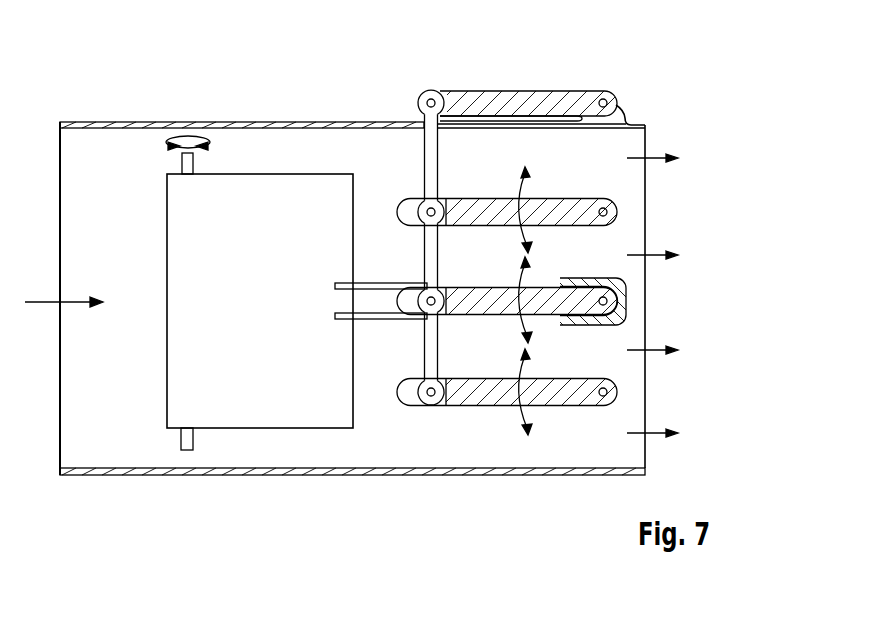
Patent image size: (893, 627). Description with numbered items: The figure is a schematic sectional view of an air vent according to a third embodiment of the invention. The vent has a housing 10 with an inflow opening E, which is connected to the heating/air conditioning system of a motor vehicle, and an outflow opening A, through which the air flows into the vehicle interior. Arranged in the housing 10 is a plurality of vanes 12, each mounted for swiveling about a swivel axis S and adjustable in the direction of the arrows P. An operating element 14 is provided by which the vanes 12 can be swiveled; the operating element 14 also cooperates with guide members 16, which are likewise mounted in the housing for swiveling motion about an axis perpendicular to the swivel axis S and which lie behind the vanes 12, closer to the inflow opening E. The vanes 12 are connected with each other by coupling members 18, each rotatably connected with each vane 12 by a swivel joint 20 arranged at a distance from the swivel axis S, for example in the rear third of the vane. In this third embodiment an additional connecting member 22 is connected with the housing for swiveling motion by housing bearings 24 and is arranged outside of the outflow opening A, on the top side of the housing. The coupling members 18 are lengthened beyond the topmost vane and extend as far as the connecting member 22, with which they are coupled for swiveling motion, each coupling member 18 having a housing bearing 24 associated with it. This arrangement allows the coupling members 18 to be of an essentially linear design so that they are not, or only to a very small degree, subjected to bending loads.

The housing 10 is at (388, 121).
The vane 12 is at (472, 205).
The operating element 14 is at (633, 284).
The guide member 16 is at (291, 173).
The coupling member 18 is at (432, 262).
The swivel joint 20 is at (420, 207).
The connecting member 22 is at (512, 97).
The housing bearing 24 is at (620, 108).
The inflow opening E is at (64, 278).
The outflow opening A is at (655, 157).
The arrows indicating swivel direction P is at (530, 180).
The swivel axis S is at (600, 208).